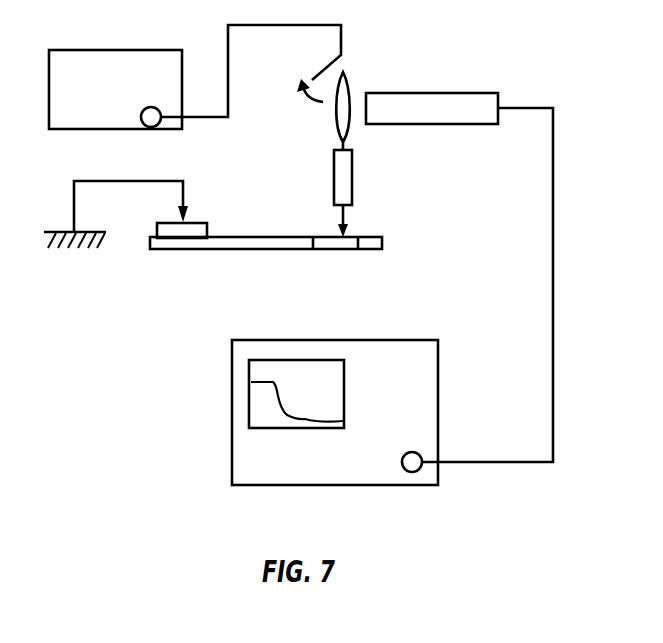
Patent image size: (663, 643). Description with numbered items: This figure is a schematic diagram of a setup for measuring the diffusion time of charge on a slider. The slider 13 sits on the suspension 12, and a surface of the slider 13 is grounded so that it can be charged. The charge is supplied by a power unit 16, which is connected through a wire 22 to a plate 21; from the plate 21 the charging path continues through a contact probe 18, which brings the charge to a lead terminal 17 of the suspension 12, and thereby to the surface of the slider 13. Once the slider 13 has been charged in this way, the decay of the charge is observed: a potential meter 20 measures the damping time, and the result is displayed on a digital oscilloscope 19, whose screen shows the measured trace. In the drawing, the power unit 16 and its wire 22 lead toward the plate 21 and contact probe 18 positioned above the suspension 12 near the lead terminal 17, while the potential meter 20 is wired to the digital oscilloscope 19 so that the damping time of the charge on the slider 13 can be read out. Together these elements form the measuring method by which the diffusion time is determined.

The suspension 12 is at (222, 250).
The slider 13 is at (207, 232).
The power unit 16 is at (115, 89).
The lead terminal 17 is at (350, 237).
The contact probe 18 is at (350, 215).
The digital oscilloscope 19 is at (328, 462).
The potential meter 20 is at (430, 93).
The plate 21 is at (347, 76).
The wire 22 is at (285, 25).